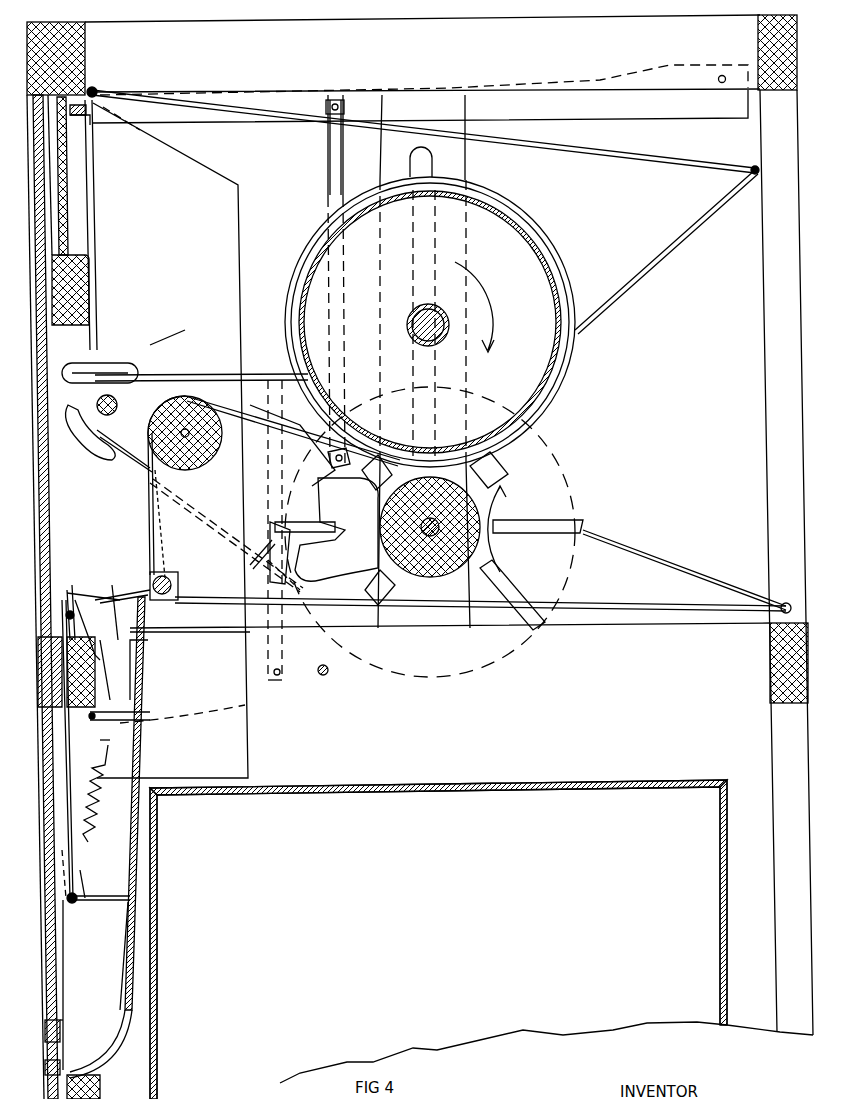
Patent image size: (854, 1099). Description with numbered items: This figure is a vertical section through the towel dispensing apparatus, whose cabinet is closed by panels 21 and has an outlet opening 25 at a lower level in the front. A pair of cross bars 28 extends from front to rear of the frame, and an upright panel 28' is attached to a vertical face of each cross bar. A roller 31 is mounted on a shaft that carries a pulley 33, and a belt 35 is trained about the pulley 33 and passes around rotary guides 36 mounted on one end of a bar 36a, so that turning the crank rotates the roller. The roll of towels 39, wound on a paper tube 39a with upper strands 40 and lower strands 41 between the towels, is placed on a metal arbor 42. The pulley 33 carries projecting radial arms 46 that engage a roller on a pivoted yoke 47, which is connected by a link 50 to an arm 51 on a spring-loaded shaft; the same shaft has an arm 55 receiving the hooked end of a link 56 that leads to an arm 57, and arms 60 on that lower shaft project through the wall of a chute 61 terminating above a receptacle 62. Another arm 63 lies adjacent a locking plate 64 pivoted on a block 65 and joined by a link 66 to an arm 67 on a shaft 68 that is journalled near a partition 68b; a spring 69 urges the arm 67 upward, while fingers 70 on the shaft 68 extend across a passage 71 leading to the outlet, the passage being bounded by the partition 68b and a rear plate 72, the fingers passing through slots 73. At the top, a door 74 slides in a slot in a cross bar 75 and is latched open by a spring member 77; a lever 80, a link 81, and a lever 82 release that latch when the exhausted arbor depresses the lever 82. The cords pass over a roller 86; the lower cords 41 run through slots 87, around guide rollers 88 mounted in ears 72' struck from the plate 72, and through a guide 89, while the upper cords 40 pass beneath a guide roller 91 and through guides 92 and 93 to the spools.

The panel 21 is at (52, 168).
The outlet opening 25 is at (75, 1040).
The cross bar 28 is at (338, 648).
The upright panel 28' is at (292, 445).
The roller 31 is at (432, 577).
The pulley 33 is at (565, 458).
The belt 35 is at (212, 374).
The rotary guide 36 is at (110, 362).
The bar 36a is at (184, 328).
The roll of towels 39 is at (545, 242).
The paper tube 39a is at (408, 325).
The upper strand 40 is at (648, 160).
The lower strand 41 is at (205, 603).
The arbor 42 is at (410, 312).
The radial arm 46 is at (543, 520).
The yoke 47 is at (290, 556).
The link 50 is at (258, 535).
The arm 51 is at (110, 670).
The arm 55 is at (122, 602).
The link 56 is at (135, 652).
The arm 57 is at (120, 718).
The arm 60 is at (190, 726).
The chute 61 is at (240, 192).
The receptacle 62 is at (625, 780).
The arm 63 is at (78, 600).
The locking plate 64 is at (70, 608).
The block 65 is at (108, 600).
The link 66 is at (66, 738).
The arm 67 is at (85, 885).
The shaft 68 is at (74, 900).
The partition 68b is at (51, 872).
The spring 69 is at (100, 810).
The finger 70 is at (132, 898).
The passage 71 is at (90, 1005).
The plate 72 is at (136, 837).
The ear 72' is at (226, 535).
The slot 73 is at (128, 915).
The door 74 is at (68, 197).
The cross bar 75 is at (86, 272).
The spring member 77 is at (78, 112).
The lever 80 is at (712, 118).
The link 81 is at (328, 146).
The lever 82 is at (408, 438).
The roller 86 is at (200, 468).
The slot 87 is at (158, 520).
The guide roller 88 is at (172, 572).
The guide 89 is at (786, 602).
The guide roller 91 is at (112, 400).
The guide 92 is at (95, 90).
The guide 93 is at (752, 178).